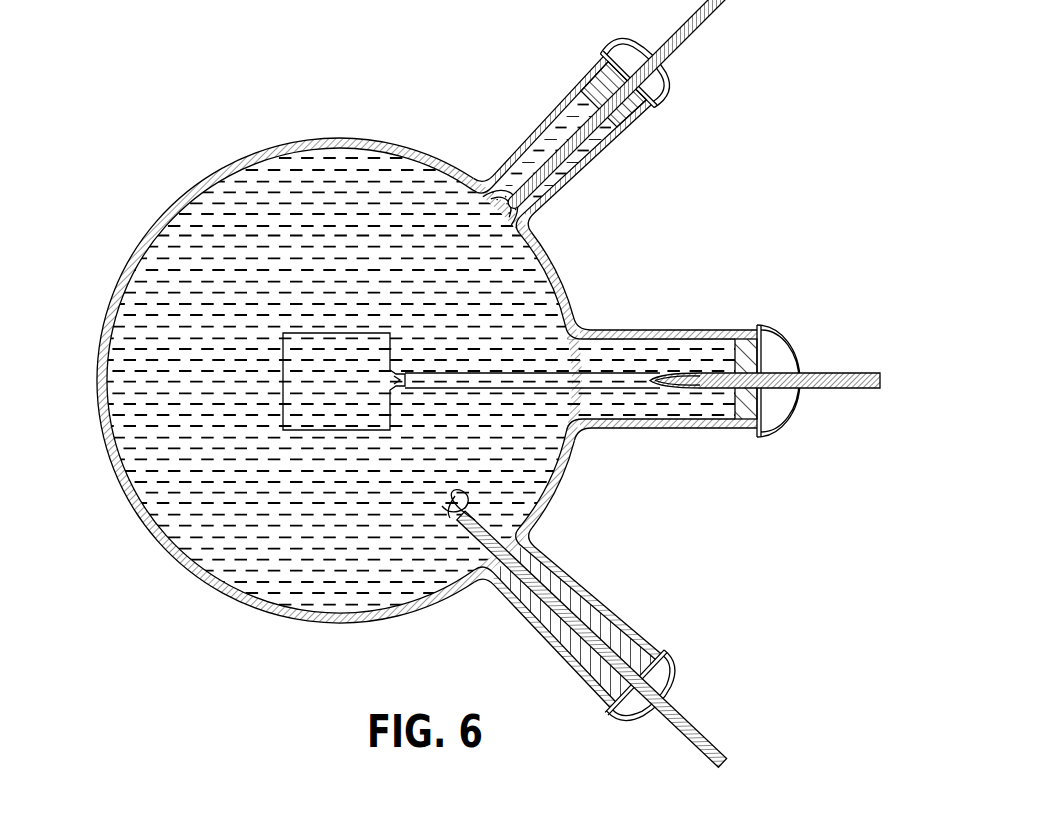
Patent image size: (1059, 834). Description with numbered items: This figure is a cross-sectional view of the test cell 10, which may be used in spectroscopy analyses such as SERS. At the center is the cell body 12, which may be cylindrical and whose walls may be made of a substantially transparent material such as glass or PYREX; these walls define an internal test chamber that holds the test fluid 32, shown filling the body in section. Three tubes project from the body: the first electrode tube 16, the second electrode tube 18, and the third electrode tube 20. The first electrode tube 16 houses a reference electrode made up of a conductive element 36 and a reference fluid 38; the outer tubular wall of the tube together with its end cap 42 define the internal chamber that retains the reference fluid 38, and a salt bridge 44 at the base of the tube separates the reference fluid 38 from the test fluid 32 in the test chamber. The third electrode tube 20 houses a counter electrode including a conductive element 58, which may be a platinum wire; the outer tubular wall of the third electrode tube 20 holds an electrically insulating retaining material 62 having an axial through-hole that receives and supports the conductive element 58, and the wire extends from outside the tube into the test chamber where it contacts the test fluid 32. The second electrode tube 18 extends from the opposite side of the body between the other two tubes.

The cell 10 is at (168, 105).
The cell body 12 is at (138, 235).
The first electrode tube 16 is at (627, 147).
The second electrode tube 18 is at (683, 327).
The third electrode tube 20 is at (630, 602).
The test fluid 32 is at (277, 210).
The conductive element 36 is at (570, 127).
The reference fluid 38 is at (527, 167).
The end cap 42 is at (613, 75).
The salt bridge 44 is at (540, 217).
The conductive element 58 is at (650, 710).
The retaining material 62 is at (597, 670).